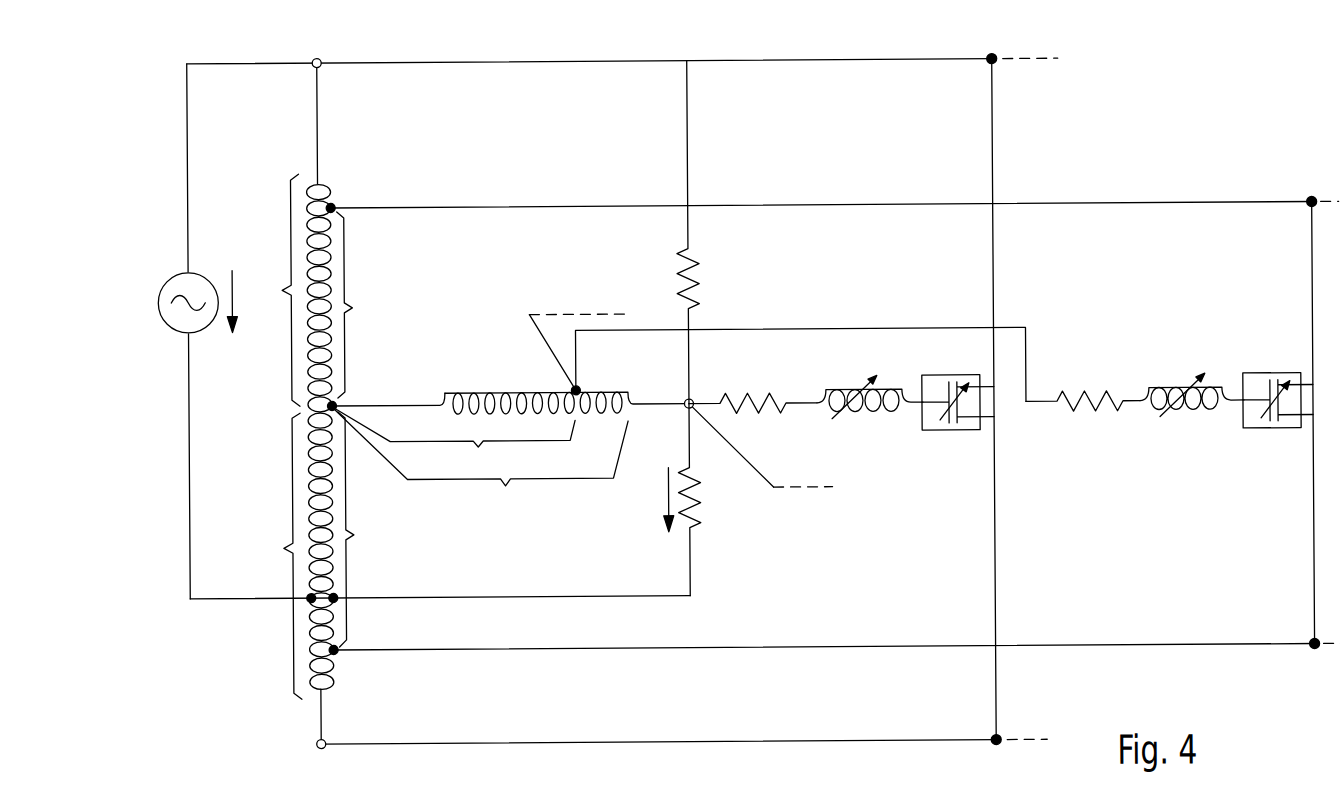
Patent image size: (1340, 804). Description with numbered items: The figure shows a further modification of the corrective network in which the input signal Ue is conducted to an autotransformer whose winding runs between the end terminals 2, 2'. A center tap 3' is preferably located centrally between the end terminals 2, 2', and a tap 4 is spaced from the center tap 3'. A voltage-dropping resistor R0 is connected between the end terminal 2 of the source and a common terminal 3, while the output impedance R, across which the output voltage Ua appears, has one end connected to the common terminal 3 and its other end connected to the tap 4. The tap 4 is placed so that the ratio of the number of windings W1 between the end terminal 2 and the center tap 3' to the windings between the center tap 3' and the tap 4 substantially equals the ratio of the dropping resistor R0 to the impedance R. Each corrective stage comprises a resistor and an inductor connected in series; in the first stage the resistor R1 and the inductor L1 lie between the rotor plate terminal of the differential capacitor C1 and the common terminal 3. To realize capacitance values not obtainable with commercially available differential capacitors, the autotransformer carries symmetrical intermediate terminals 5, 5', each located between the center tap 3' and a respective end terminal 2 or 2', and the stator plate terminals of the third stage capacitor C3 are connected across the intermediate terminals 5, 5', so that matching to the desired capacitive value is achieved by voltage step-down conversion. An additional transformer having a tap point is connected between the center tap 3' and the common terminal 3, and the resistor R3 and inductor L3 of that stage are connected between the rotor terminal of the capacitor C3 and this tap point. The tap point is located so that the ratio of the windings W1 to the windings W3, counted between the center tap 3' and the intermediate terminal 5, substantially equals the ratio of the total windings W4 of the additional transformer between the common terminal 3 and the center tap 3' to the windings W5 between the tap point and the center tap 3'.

The end terminal 2 is at (622, 48).
The end terminal 2' is at (682, 759).
The common terminal 3 is at (758, 425).
The center tap 3' is at (386, 390).
The tap 4 is at (334, 600).
The intermediate terminal 5 is at (832, 193).
The intermediate terminal 5' is at (834, 663).
The number of windings W1 is at (273, 436).
The number of windings W3 is at (367, 429).
The total number of windings W4 is at (481, 467).
The number of windings W5 is at (454, 444).
The input signal Ue is at (198, 288).
The output voltage Ua is at (650, 500).
The voltage-dropping resistor R0 is at (700, 294).
The output impedance R is at (697, 508).
The resistor R1 is at (750, 396).
The inductor L1 is at (845, 390).
The differential capacitor C1 is at (967, 381).
The resistor R3 is at (1067, 400).
The inductor L3 is at (1172, 394).
The differential capacitor C3 is at (1255, 383).